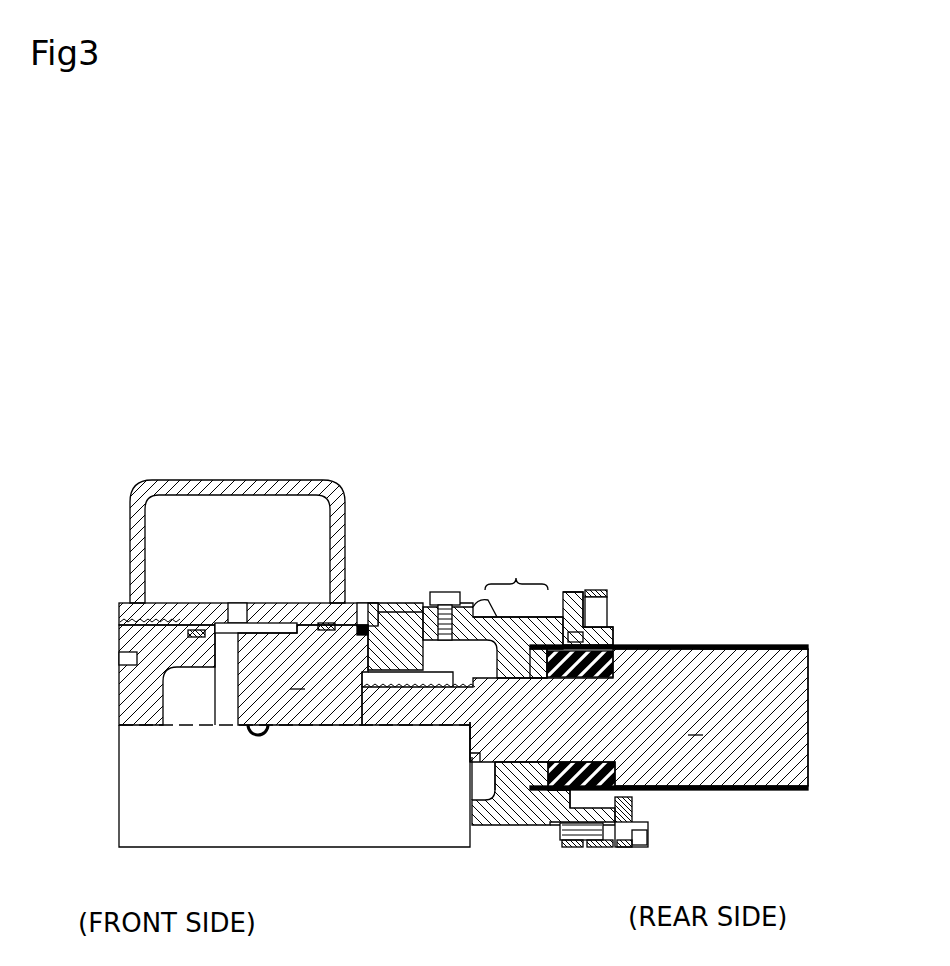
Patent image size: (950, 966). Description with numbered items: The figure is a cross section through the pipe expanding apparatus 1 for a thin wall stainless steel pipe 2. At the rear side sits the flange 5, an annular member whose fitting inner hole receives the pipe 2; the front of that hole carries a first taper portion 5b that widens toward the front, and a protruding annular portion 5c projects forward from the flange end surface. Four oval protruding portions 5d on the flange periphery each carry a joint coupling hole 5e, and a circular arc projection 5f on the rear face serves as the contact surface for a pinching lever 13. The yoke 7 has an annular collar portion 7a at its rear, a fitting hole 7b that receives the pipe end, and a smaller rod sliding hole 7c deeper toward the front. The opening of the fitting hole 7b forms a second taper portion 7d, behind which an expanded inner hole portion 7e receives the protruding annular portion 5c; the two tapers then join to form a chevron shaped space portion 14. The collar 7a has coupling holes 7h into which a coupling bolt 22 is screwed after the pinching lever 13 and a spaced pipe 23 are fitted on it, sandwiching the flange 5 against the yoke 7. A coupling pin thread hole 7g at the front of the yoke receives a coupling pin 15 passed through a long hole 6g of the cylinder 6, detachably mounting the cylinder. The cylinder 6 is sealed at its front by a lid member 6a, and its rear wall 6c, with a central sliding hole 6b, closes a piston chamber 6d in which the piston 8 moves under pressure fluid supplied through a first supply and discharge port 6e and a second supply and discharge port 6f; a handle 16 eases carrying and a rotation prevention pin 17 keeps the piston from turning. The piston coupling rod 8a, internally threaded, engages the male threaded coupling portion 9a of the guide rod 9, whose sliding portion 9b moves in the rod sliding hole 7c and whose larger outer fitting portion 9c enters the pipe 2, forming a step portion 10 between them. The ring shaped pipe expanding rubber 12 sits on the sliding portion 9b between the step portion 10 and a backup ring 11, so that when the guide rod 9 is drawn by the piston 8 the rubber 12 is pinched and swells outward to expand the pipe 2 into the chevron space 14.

The connection structure 1 is at (517, 526).
The thin wall stainless steel pipe 2 is at (752, 648).
The flange 5 is at (599, 578).
The first taper portion 5b is at (568, 616).
The protruding annular portion 5c is at (572, 612).
The protruding portion 5d is at (604, 593).
The joint coupling hole 5e is at (597, 618).
The circular arc projection 5f is at (633, 801).
The cylinder 6 is at (182, 604).
The lid member 6a is at (128, 702).
The sliding hole 6b is at (368, 676).
The rear wall 6c is at (393, 645).
The piston chamber 6d is at (228, 713).
The first supply and discharge port 6e is at (366, 611).
The second supply and discharge port 6f is at (232, 606).
The long hole 6g is at (470, 627).
The yoke 7 is at (480, 834).
The annular collar portion 7a is at (563, 843).
The fitting hole 7b is at (497, 812).
The rod sliding hole 7c is at (462, 750).
The second taper portion 7d is at (518, 602).
The expanded inner hole portion 7e is at (606, 634).
The coupling pin thread hole 7g is at (490, 632).
The coupling hole 7h is at (560, 818).
The piston 8 is at (278, 675).
The piston coupling rod 8a is at (418, 677).
The guide rod 9 is at (585, 717).
The coupling portion 9a is at (372, 713).
The sliding portion 9b is at (437, 733).
The outer fitting portion 9c is at (724, 775).
The step portion 10 is at (701, 647).
The backup ring 11 is at (545, 834).
The pipe expanding rubber 12 is at (612, 662).
The pinching lever 13 is at (633, 824).
The chevron shaped space portion 14 is at (516, 569).
The coupling pin 15 is at (445, 597).
The handle 16 is at (227, 496).
The rotation prevention pin 17 is at (258, 737).
The coupling bolt 22 is at (648, 843).
The spaced pipe 23 is at (618, 848).